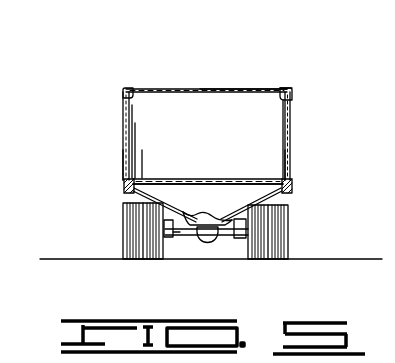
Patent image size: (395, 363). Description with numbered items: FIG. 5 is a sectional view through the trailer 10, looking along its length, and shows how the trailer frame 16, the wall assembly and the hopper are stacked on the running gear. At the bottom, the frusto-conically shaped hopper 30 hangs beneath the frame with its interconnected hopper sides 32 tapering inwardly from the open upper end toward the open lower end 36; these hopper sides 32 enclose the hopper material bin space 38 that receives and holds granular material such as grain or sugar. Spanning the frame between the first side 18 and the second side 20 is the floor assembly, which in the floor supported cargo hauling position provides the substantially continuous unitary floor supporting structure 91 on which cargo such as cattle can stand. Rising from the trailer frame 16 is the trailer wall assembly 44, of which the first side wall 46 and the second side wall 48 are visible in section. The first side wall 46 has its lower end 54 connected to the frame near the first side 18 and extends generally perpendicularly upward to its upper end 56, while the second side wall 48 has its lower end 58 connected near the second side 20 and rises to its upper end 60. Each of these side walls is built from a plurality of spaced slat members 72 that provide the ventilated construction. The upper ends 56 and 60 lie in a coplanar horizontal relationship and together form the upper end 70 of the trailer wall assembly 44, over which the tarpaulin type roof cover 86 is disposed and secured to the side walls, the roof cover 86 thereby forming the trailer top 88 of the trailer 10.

The trailer 10 is at (208, 151).
The trailer wall assembly 44 is at (118, 108).
The first side wall 46 is at (120, 117).
The slat members 72 is at (127, 128).
The lower end of the second side wall 58 is at (128, 173).
The upper end of the second side wall 60 is at (138, 96).
The trailer top 88 is at (215, 88).
The roof cover 86 is at (251, 88).
The upper end of the first side wall 56 is at (279, 94).
The upper end of the trailer wall assembly 70 is at (293, 88).
The second side wall 48 is at (293, 110).
The lower end of the first side wall 54 is at (283, 162).
The trailer frame 16 is at (292, 185).
The first side of the trailer frame 18 is at (285, 192).
The second side of the trailer frame 20 is at (123, 188).
The floor supporting structure 91 is at (199, 178).
The hopper sides 32 is at (147, 198).
The hopper material bin space 38 is at (197, 205).
The hopper 30 is at (192, 213).
The open lower end of the hopper 36 is at (220, 226).